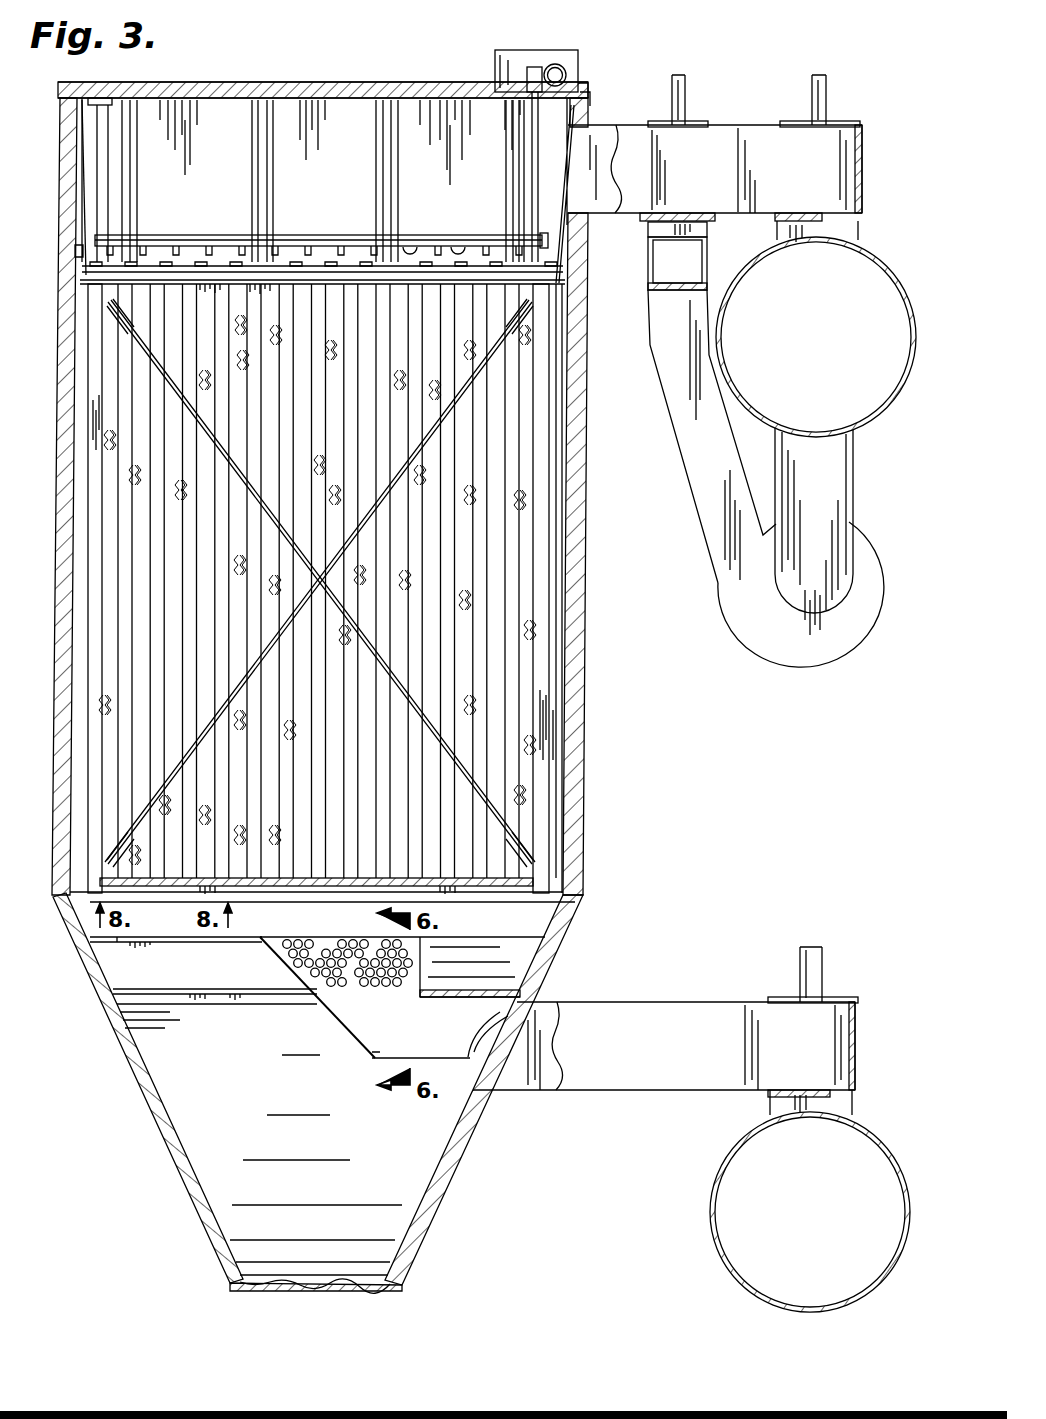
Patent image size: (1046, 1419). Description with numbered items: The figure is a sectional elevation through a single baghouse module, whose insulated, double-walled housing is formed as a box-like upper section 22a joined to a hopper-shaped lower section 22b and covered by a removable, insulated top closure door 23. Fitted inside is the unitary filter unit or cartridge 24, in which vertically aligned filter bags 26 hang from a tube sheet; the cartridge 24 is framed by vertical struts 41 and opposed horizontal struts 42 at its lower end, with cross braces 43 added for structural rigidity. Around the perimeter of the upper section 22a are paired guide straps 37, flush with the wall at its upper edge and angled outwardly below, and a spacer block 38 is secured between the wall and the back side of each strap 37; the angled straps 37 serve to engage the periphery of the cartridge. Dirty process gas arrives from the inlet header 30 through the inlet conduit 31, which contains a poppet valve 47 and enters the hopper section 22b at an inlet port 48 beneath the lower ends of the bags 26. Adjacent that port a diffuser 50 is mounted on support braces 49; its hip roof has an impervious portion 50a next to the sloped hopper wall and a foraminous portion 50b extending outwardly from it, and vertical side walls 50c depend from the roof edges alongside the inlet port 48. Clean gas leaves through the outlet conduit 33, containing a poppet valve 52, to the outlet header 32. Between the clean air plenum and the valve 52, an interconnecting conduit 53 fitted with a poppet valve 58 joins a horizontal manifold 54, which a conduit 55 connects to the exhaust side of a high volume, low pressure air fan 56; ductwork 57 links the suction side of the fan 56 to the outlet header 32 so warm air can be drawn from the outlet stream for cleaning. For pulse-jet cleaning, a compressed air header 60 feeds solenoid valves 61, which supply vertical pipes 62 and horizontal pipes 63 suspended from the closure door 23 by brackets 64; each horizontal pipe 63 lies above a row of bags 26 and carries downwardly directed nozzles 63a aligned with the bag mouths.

The upper section 22a is at (585, 778).
The hopper-shaped lower section 22b is at (470, 1181).
The top closure door 23 is at (340, 83).
The filter unit or cartridge 24 is at (556, 727).
The filter bags 26 is at (110, 573).
The inlet process gas header 30 is at (748, 1134).
The inlet conduit 31 is at (676, 1002).
The outlet gas header 32 is at (722, 325).
The outlet conduit 33 is at (728, 135).
The guide straps 37 is at (127, 217).
The spacer block 38 is at (75, 250).
The vertical struts 41 is at (92, 637).
The horizontal struts 42 is at (455, 890).
The cross braces 43 is at (393, 492).
The poppet valve 47 is at (800, 960).
The inlet port 48 is at (478, 1062).
The support braces 49 is at (163, 940).
The diffuser 50 is at (336, 1024).
The impervious portion 50a is at (530, 943).
The foraminous portion 50b is at (300, 940).
The vertical side walls 50c is at (374, 1058).
The poppet valve 52 is at (828, 90).
The interconnecting conduit 53 is at (660, 228).
The manifold 54 is at (650, 265).
The conduit 55 is at (675, 380).
The air fan 56 is at (838, 645).
The ductwork 57 is at (828, 486).
The poppet valve 58 is at (688, 90).
The compressed air header 60 is at (568, 72).
The solenoid valves 61 is at (548, 56).
The vertical pipes 62 is at (540, 130).
The horizontal pipes 63 is at (346, 240).
The nozzles 63a is at (454, 247).
The brackets 64 is at (102, 180).